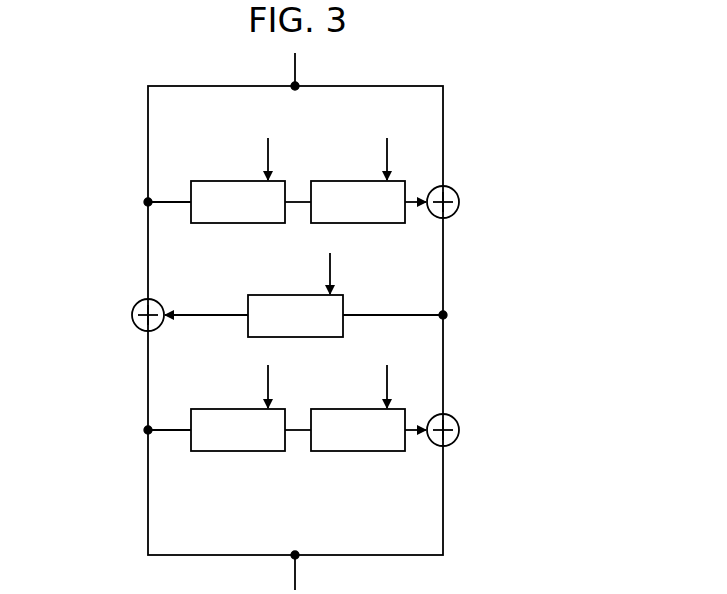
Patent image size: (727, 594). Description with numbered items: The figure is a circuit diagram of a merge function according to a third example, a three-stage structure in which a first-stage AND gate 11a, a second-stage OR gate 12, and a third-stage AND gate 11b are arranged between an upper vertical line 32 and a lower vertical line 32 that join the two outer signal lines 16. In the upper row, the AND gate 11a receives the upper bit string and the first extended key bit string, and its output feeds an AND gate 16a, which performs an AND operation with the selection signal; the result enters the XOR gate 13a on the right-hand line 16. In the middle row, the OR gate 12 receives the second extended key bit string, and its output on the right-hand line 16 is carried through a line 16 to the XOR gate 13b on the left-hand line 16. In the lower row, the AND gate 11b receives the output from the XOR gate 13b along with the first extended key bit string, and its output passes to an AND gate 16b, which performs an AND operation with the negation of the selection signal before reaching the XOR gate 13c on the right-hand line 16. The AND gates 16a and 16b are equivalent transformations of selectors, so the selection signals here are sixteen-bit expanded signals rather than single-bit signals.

The AND gate 11a is at (210, 180).
The AND gate 11b is at (210, 408).
The OR gate 12 is at (268, 295).
The XOR gate 13a is at (460, 190).
The XOR gate 13b is at (137, 302).
The XOR gate 13c is at (460, 418).
The signal line 16 is at (152, 147).
The AND gate 16a is at (343, 180).
The AND gate 16b is at (343, 408).
The vertical bus line 32 is at (300, 77).